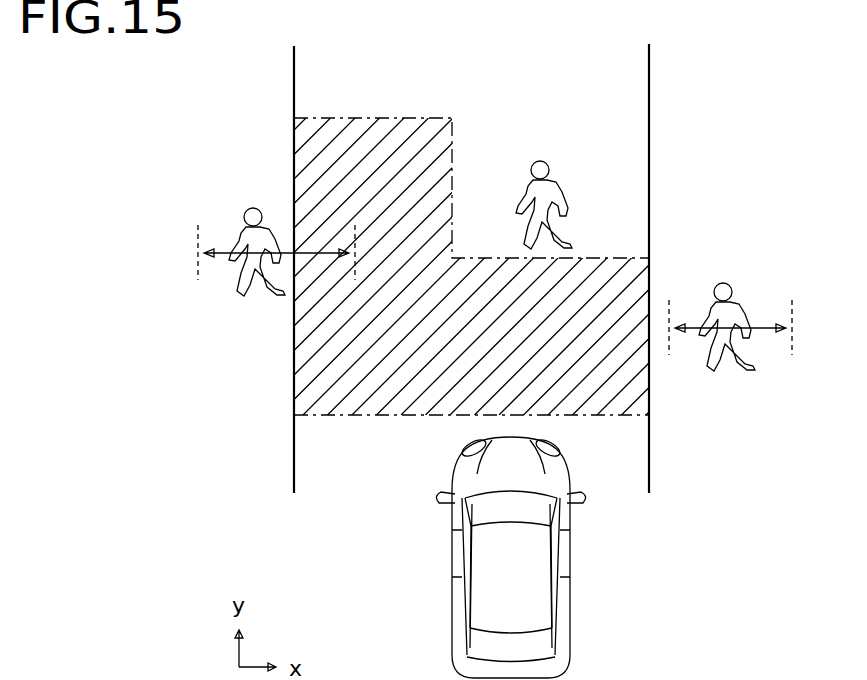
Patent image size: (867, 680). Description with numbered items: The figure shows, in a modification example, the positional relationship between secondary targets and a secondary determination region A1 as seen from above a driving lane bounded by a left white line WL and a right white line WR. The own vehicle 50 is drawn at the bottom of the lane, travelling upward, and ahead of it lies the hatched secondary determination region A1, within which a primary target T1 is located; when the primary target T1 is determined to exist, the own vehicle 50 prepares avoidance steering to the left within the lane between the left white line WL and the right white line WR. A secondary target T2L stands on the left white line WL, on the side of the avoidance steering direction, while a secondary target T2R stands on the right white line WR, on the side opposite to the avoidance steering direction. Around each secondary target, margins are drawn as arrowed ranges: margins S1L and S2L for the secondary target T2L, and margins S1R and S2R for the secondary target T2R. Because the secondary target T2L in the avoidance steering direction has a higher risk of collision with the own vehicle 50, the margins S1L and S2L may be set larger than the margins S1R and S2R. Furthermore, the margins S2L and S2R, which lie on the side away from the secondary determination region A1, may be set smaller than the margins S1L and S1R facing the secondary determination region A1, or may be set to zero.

The secondary determination region A1 is at (408, 118).
The primary target T1 is at (556, 182).
The secondary target T2L is at (253, 208).
The secondary target T2R is at (723, 283).
The margin S1L is at (316, 250).
The margin S2L is at (222, 250).
The margin S1R is at (694, 327).
The margin S2R is at (768, 327).
The left white line WL is at (293, 456).
The right white line WR is at (651, 455).
The own vehicle 50 is at (569, 638).